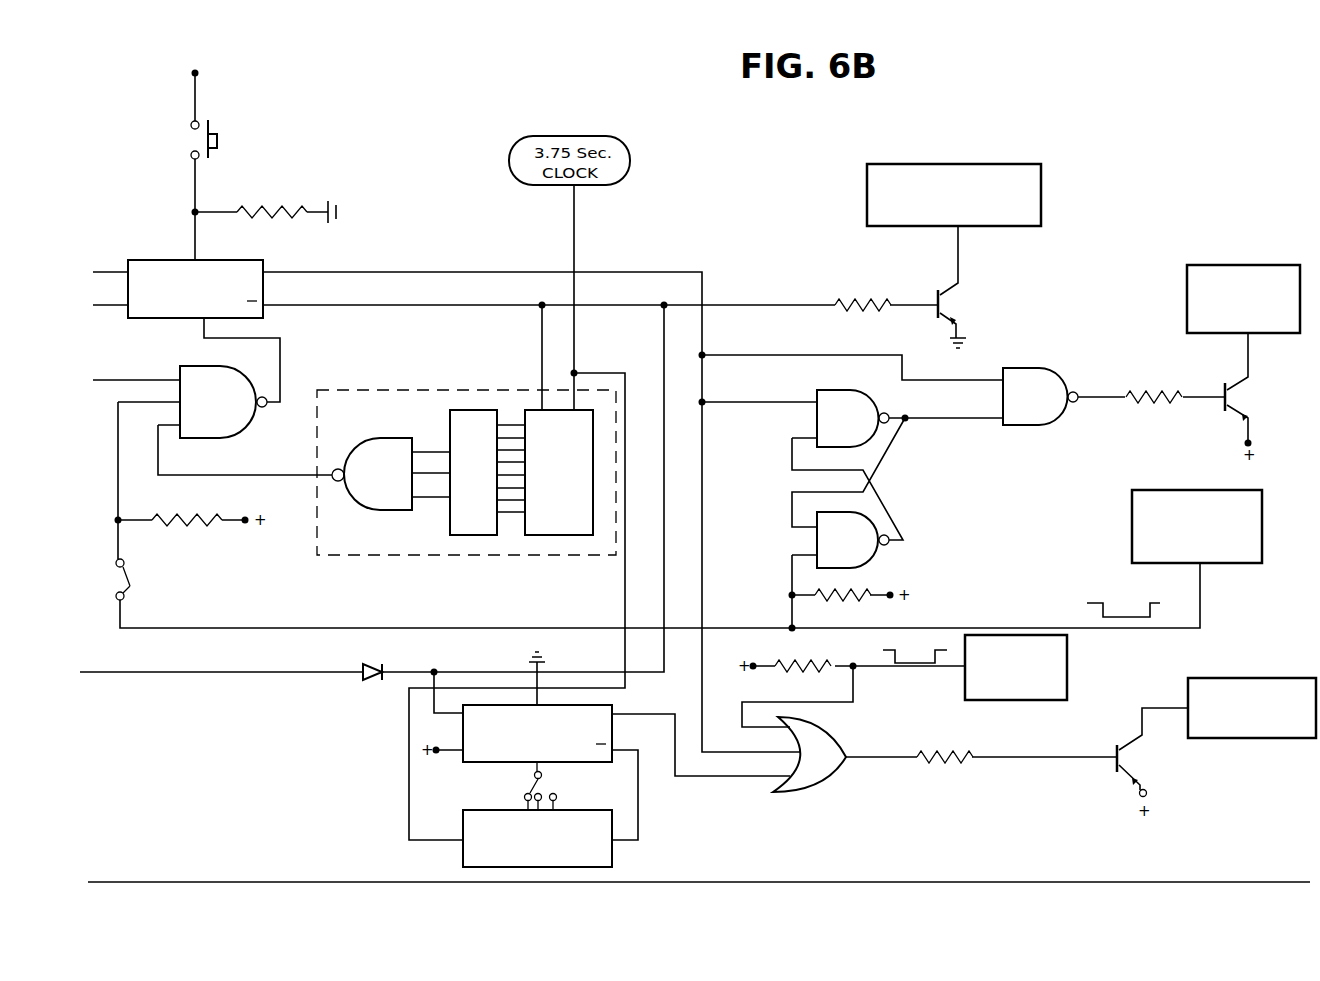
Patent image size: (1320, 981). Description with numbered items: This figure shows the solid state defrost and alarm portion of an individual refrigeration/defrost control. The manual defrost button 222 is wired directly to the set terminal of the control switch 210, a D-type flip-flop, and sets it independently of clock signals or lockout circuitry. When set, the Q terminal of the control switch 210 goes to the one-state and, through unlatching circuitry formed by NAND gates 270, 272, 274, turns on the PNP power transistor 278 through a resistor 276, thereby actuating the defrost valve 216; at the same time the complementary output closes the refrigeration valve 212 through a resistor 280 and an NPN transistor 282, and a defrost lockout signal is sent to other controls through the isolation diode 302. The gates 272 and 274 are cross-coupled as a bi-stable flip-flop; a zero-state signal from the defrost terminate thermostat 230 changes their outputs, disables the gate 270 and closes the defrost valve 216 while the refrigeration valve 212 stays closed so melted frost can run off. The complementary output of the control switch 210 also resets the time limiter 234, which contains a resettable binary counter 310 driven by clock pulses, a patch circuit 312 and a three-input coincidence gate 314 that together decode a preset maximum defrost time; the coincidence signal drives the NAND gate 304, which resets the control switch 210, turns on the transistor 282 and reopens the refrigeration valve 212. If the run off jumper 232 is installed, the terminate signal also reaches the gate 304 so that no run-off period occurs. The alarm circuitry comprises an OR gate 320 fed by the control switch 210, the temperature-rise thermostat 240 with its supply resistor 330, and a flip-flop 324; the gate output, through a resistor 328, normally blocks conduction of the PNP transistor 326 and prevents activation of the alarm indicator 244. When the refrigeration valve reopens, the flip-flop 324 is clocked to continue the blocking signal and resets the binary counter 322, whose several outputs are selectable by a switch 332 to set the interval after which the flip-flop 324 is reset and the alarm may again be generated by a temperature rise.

The control switch 210 is at (172, 258).
The manual defrost button 222 is at (212, 124).
The NAND gate 304 is at (197, 366).
The three-input coincidence gate 314 is at (343, 468).
The time limiter 234 is at (413, 390).
The patch circuit 312 is at (447, 428).
The resettable binary counter 310 is at (568, 535).
The run off jumper 232 is at (130, 582).
The refrigeration valve 212 is at (867, 205).
The resistor 280 is at (850, 300).
The NPN transistor 282 is at (935, 296).
The defrost valve 216 is at (1187, 318).
The NAND gate 272 is at (832, 390).
The NAND gate 274 is at (868, 558).
The NAND gate 270 is at (1012, 426).
The resistor 276 is at (1136, 403).
The PNP power transistor 278 is at (1224, 408).
The defrost terminate thermostat 230 is at (1210, 565).
The isolation diode 302 is at (370, 664).
The resistor 330 is at (786, 662).
The temperature-rise thermostat 240 is at (1067, 680).
The OR gate 320 is at (834, 732).
The resistor 328 is at (942, 765).
The PNP transistor 326 is at (1114, 762).
The alarm indicator 244 is at (1231, 678).
The D type flip-flop switch 324 is at (490, 764).
The switch 332 is at (545, 789).
The binary counter 322 is at (463, 858).